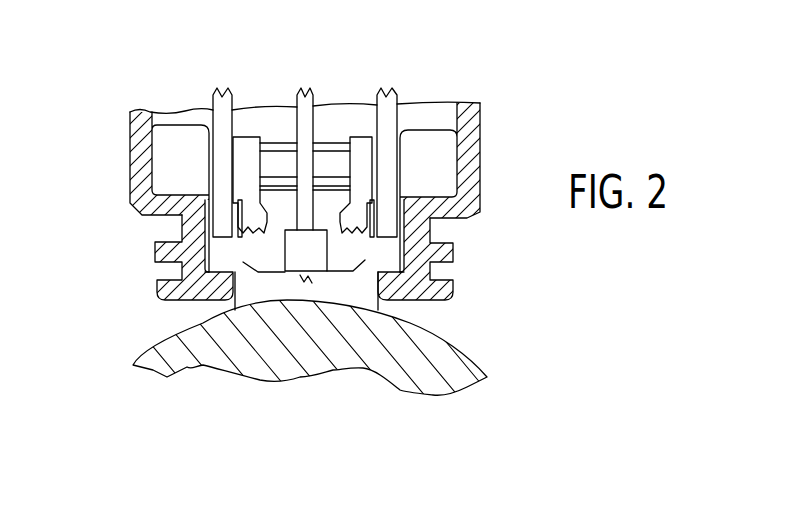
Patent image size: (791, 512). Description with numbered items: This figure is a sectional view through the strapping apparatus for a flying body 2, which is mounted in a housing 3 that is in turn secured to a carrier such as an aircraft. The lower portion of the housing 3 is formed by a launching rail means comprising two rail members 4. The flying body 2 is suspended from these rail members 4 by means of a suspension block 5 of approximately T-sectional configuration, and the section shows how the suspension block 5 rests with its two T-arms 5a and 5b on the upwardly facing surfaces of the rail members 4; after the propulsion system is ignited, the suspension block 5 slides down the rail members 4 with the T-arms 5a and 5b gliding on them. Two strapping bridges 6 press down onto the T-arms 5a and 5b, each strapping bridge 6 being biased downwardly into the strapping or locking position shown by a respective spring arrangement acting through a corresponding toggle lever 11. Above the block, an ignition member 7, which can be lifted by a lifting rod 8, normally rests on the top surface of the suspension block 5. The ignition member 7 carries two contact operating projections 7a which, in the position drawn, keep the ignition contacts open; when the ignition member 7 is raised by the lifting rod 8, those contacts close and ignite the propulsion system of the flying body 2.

The flying body 2 is at (368, 350).
The housing 3 is at (530, 134).
The rail members 4 is at (182, 289).
The suspension block 5 is at (342, 290).
The T-arm 5a is at (223, 266).
The T-arm 5b is at (387, 265).
The strapping bridge 6 is at (220, 242).
The ignition member 7 is at (272, 272).
The contact operating projection 7a is at (300, 272).
The lifting rod 8 is at (323, 115).
The toggle lever 11 is at (240, 118).